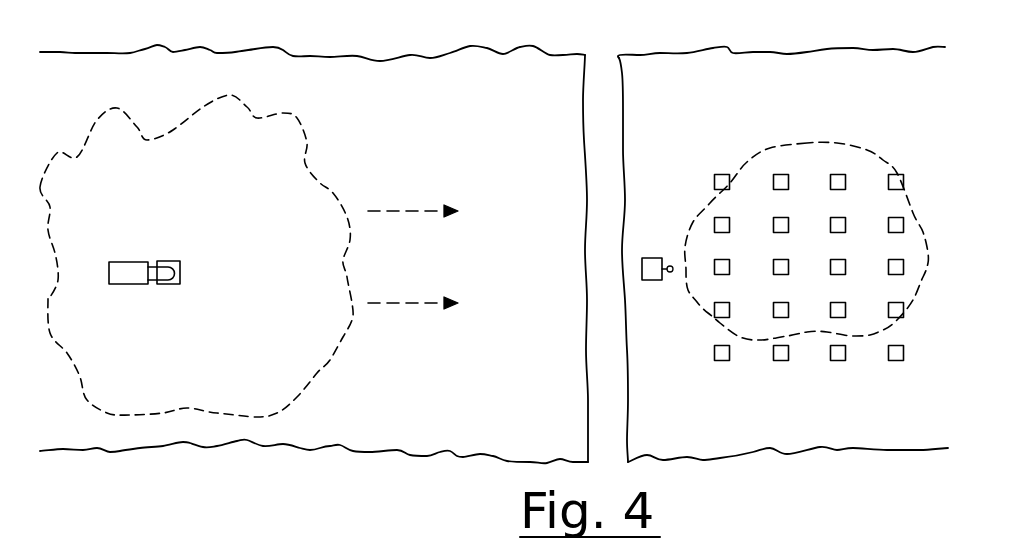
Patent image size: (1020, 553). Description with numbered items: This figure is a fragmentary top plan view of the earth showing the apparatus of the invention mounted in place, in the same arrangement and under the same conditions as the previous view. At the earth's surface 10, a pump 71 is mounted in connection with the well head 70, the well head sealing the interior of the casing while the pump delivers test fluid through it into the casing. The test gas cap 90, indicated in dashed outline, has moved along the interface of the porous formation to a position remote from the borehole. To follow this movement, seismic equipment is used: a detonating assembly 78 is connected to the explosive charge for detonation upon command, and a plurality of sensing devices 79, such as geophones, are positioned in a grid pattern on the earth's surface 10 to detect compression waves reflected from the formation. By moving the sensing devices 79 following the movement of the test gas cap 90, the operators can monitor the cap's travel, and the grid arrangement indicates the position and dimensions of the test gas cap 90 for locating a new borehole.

The earth's surface 10 is at (435, 113).
The well head 70 is at (163, 271).
The pump 71 is at (117, 262).
The detonating assembly 78 is at (652, 281).
The sensing devices 79 is at (892, 190).
The test gas cap 90 is at (352, 320).